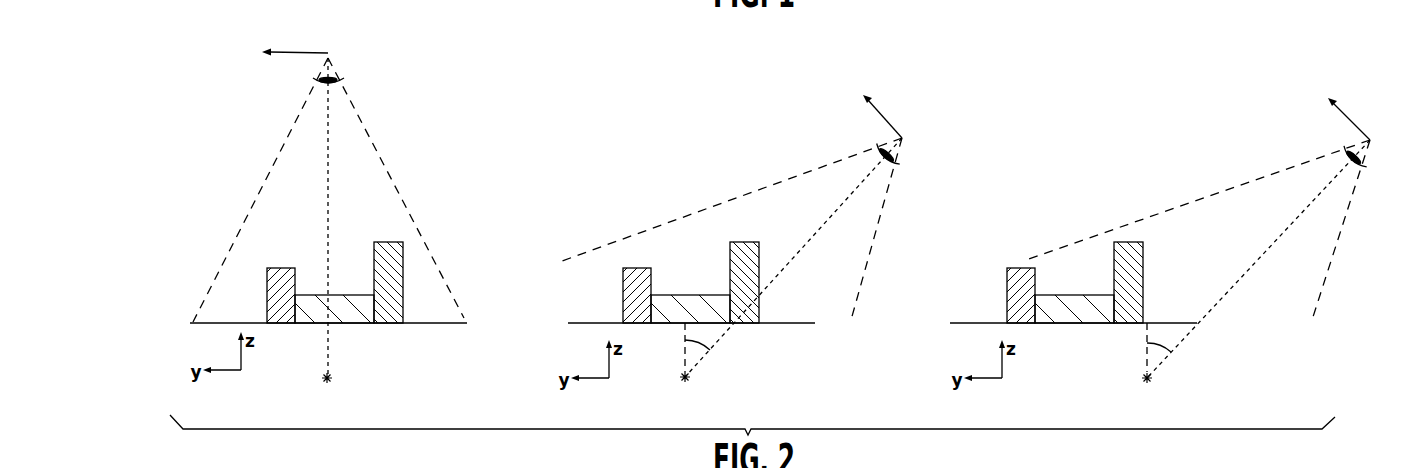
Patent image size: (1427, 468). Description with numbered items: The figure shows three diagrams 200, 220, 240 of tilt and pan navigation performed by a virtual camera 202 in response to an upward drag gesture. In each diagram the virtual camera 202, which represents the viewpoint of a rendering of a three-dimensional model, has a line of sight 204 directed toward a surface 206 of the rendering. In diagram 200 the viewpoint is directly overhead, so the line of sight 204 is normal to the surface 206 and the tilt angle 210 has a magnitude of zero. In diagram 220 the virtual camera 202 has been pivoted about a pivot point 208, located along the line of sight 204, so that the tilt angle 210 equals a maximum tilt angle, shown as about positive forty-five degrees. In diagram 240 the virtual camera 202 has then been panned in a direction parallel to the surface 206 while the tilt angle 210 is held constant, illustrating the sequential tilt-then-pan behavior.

The diagram 200 is at (422, 124).
The diagram 220 is at (662, 106).
The diagram 240 is at (1126, 106).
The virtual camera 202 is at (330, 56).
The line of sight 204 is at (329, 205).
The surface 206 is at (425, 323).
The pivot point 208 is at (331, 378).
The tilt angle 210 is at (712, 352).